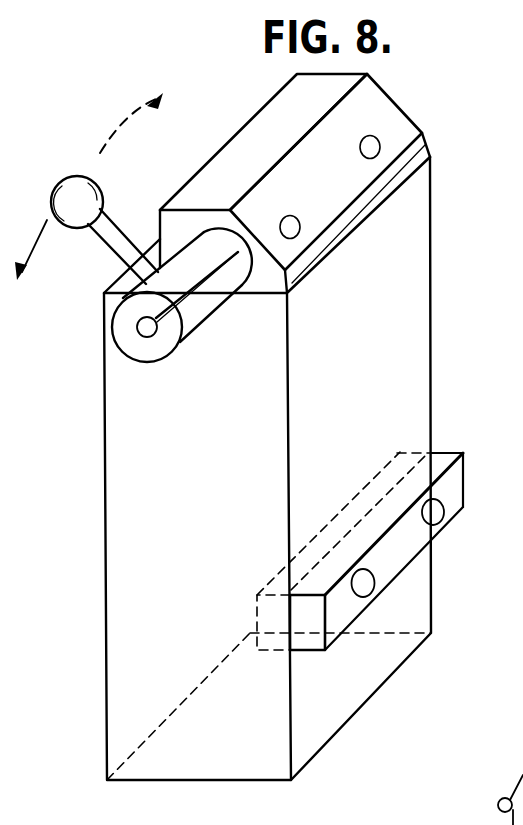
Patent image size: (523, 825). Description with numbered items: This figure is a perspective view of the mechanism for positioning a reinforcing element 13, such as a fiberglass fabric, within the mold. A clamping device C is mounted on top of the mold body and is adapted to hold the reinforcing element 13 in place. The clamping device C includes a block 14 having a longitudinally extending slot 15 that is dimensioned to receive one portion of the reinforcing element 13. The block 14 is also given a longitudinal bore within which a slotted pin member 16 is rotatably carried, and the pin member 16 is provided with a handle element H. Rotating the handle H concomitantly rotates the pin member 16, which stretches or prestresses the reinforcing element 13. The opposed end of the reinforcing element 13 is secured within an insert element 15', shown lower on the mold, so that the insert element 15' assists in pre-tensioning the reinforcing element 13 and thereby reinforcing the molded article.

The reinforcing element 13 is at (428, 299).
The block 14 is at (353, 180).
The longitudinally extending slot 15 is at (379, 208).
The insert element 15' is at (386, 551).
The slotted pin member 16 is at (192, 312).
The clamping device C is at (315, 179).
The handle element H is at (69, 178).